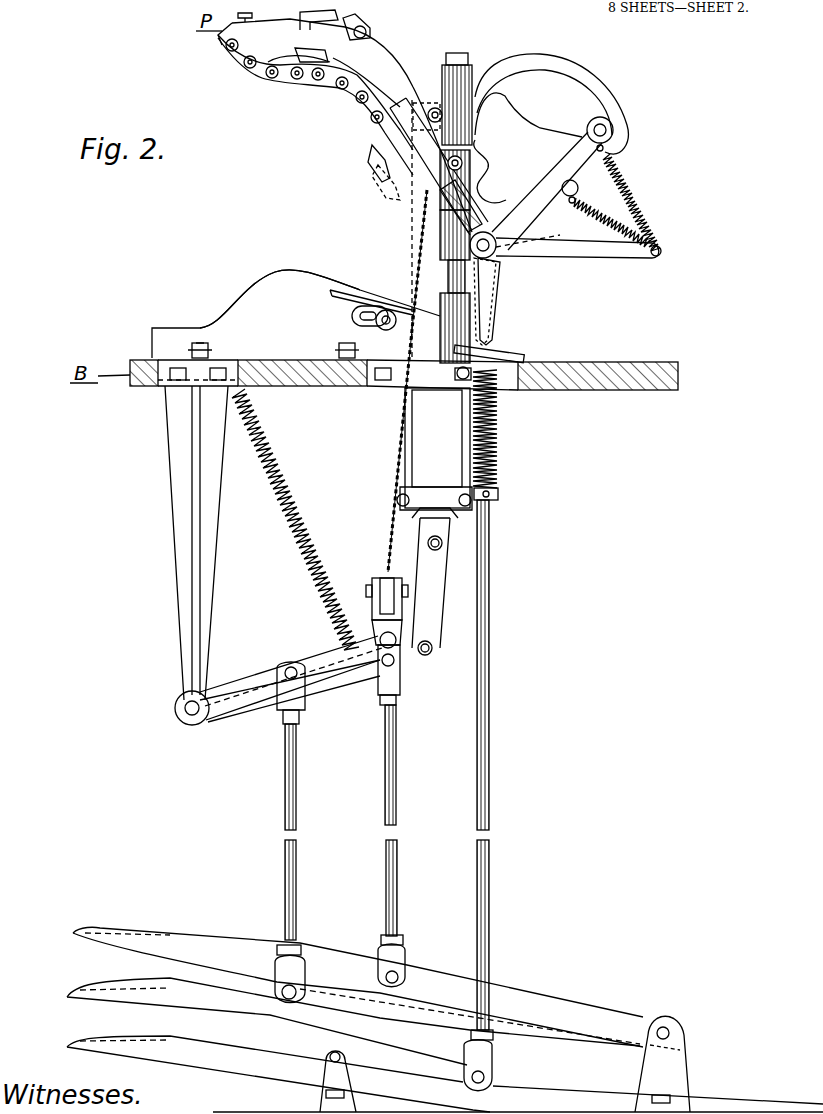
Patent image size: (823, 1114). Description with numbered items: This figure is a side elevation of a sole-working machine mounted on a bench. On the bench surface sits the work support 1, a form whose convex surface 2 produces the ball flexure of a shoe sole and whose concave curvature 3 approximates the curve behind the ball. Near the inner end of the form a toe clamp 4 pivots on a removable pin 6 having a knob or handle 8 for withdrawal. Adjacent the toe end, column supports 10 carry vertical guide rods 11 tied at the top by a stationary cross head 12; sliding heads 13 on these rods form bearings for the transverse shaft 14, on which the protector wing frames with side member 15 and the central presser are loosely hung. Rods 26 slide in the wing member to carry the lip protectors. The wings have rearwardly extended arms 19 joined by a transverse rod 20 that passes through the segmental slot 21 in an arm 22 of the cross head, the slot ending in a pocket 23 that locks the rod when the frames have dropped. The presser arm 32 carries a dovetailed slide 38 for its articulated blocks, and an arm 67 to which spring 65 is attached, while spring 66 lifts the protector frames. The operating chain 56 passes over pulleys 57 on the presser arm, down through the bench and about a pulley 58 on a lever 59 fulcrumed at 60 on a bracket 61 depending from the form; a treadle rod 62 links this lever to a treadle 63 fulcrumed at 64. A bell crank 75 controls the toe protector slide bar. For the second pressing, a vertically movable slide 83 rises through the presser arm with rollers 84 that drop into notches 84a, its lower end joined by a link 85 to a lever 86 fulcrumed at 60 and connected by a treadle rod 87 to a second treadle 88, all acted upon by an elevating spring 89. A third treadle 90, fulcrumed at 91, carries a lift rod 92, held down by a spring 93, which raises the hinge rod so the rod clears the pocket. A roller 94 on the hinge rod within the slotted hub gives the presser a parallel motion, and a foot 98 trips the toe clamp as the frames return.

The work support 1 is at (404, 330).
The convex surface 2 is at (317, 282).
The concave curvature 3 is at (237, 300).
The toe clamp 4 is at (380, 296).
The removable pin 6 is at (368, 324).
The knob or handle 8 is at (386, 330).
The column supports 10 is at (452, 340).
The guide rods 11 is at (466, 286).
The stationary cross head 12 is at (460, 80).
The sliding heads 13 is at (440, 230).
The transverse shaft 14 is at (490, 250).
The side member 15 is at (280, 80).
The rearwardly extended arms 19 is at (540, 190).
The transverse rod 20 is at (612, 130).
The segmental slot 21 is at (572, 103).
The arm 22 is at (535, 62).
The pocket 23 is at (490, 118).
The rods 26 is at (228, 52).
The presser arm 32 is at (385, 52).
The transverse dovetailed slide 38 is at (313, 60).
The operating chain 56 is at (405, 426).
The pulleys 57 is at (372, 180).
The pulley 58 is at (380, 578).
The lever 59 is at (322, 655).
The fulcrum 60 is at (184, 716).
The bracket 61 is at (178, 522).
The treadle rod 62 is at (287, 790).
The treadle 63 is at (250, 1000).
The fulcrum 64 is at (672, 1032).
The spring 65 is at (590, 205).
The spring 66 is at (640, 200).
The arm 67 is at (568, 205).
The bell crank 75 is at (370, 150).
The vertically movable slide 83 is at (420, 244).
The rollers 84 is at (435, 106).
The notches 84a is at (500, 158).
The link 85 is at (430, 600).
The lever 86 is at (360, 676).
The treadle rod 87 is at (397, 792).
The second treadle 88 is at (330, 958).
The elevating spring 89 is at (282, 458).
The third treadle 90 is at (258, 1055).
The fulcrum 91 is at (328, 1065).
The lift rod 92 is at (490, 683).
The spring 93 is at (498, 455).
The roller 94 is at (512, 248).
The foot 98 is at (496, 312).